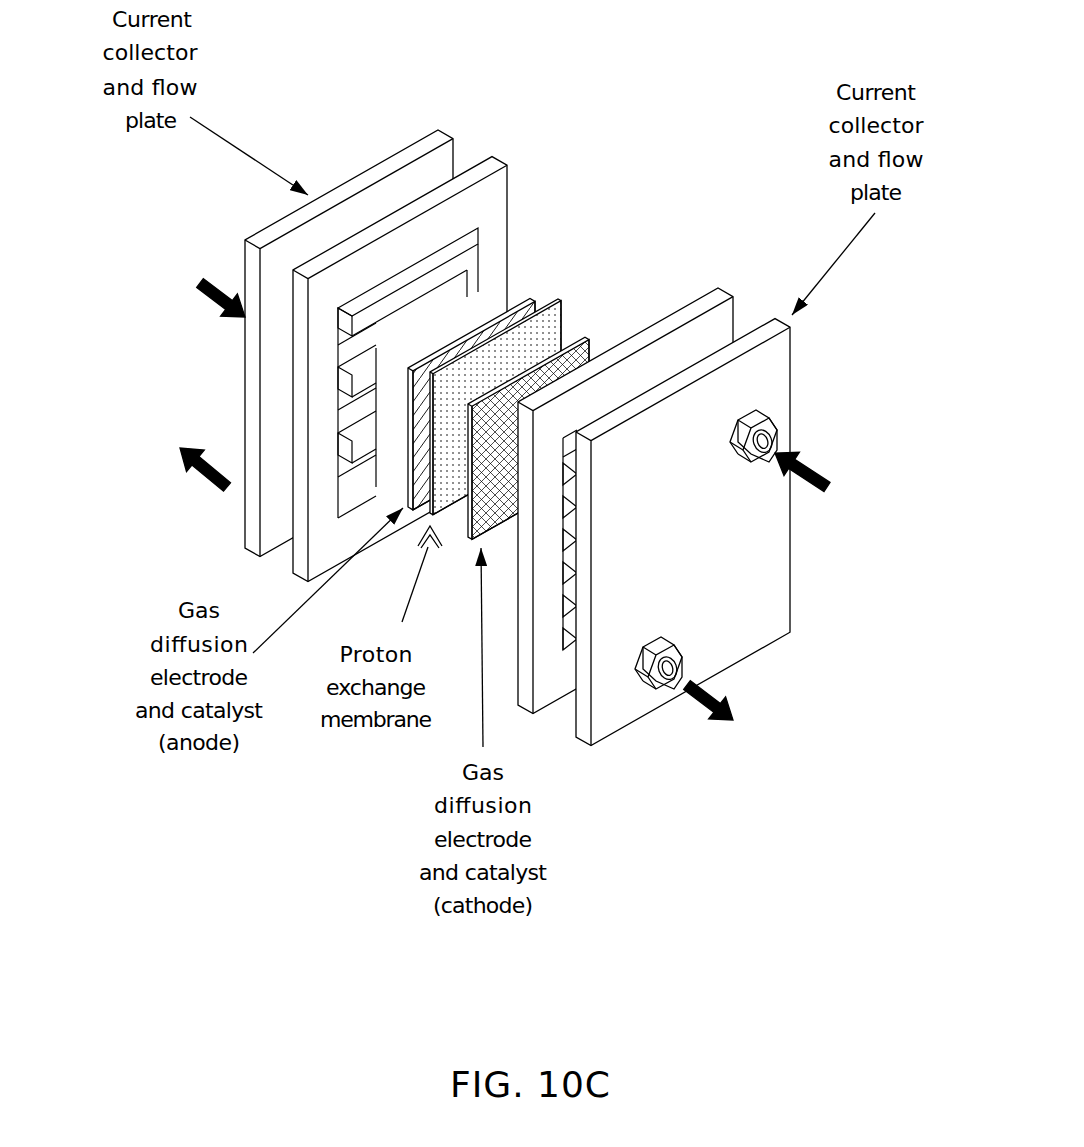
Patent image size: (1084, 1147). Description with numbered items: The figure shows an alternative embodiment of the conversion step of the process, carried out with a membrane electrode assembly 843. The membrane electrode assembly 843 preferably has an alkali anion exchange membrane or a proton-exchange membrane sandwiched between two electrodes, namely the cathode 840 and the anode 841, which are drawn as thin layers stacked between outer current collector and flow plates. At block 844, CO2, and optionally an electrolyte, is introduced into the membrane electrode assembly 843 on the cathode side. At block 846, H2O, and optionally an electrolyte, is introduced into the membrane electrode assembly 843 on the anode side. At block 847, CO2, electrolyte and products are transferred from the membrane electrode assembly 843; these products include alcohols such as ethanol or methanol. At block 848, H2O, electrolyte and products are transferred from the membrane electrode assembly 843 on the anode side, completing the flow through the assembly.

The cathode 840 is at (572, 340).
The anode 841 is at (520, 300).
The membrane electrode assembly 843 is at (552, 300).
The CO2 introduction block 844 is at (865, 462).
The H2O introduction block 846 is at (167, 242).
The CO2, electrolyte and products transfer block 847 is at (807, 703).
The H2O, electrolyte and products transfer block 848 is at (158, 410).